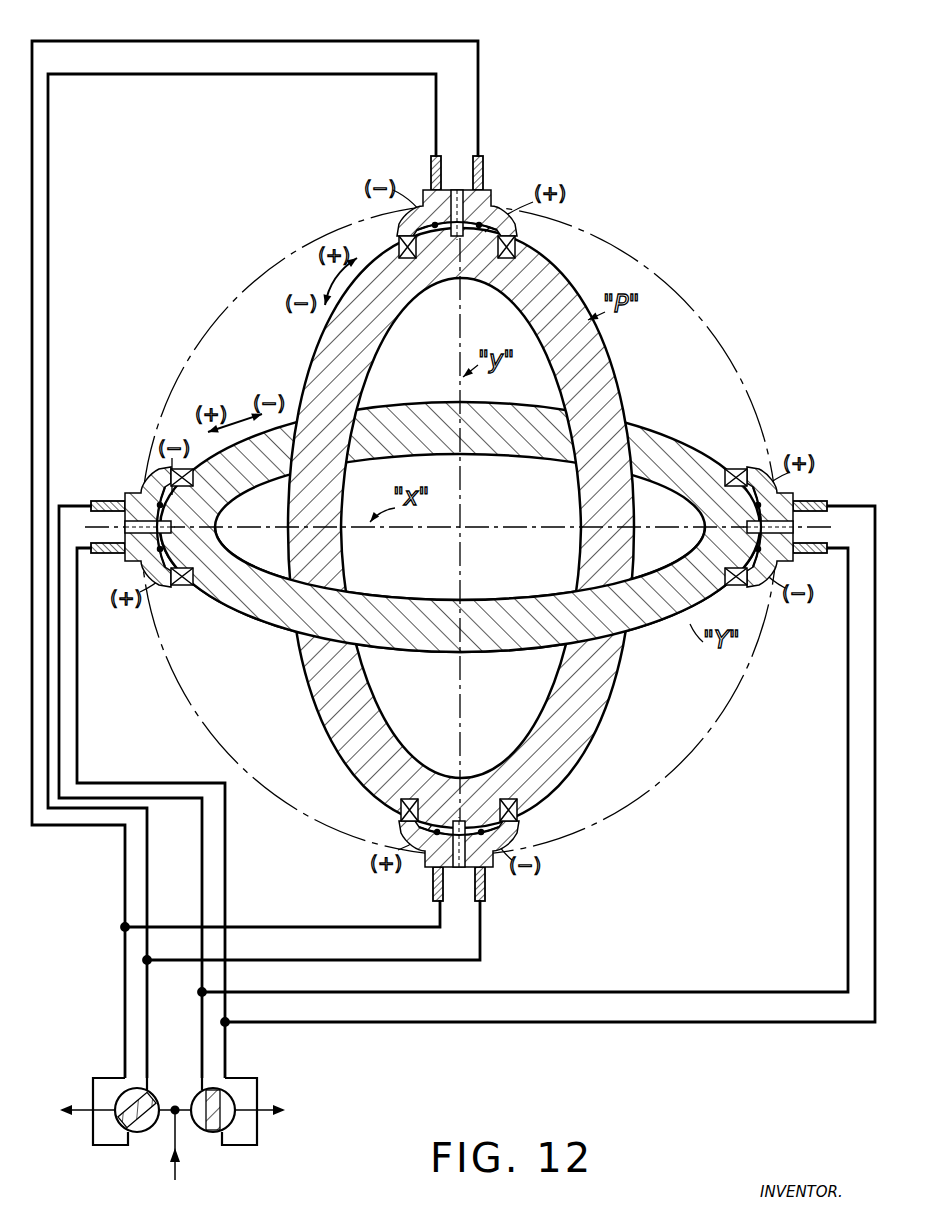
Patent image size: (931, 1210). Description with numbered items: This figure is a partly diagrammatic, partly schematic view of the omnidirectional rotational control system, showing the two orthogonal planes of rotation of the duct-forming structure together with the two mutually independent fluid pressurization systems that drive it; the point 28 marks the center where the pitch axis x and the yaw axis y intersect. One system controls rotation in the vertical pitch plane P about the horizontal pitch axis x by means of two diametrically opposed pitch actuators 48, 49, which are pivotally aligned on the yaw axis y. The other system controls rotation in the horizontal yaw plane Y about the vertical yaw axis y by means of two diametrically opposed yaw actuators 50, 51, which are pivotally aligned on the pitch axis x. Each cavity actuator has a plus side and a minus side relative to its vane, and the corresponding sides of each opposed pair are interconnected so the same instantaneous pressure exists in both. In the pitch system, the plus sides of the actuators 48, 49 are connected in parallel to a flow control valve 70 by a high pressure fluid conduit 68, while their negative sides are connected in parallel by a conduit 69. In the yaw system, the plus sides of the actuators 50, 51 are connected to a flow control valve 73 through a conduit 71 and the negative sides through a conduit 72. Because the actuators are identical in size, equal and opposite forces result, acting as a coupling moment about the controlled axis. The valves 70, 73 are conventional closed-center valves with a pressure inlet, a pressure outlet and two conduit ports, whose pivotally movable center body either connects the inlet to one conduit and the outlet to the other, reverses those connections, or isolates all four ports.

The gyroscope center (intersection of spin axes) 28 is at (462, 527).
The pitch actuator 48 is at (492, 196).
The pitch actuator 49 is at (493, 858).
The yaw actuator 50 is at (130, 497).
The yaw actuator 51 is at (778, 493).
The high pressure fluid conduit 68 is at (296, 42).
The high pressure fluid conduit 69 is at (237, 74).
The flow control valve 70 is at (128, 1135).
The high pressure fluid conduit 71 is at (875, 803).
The high pressure fluid conduit 72 is at (848, 735).
The flow control valve 73 is at (210, 1135).